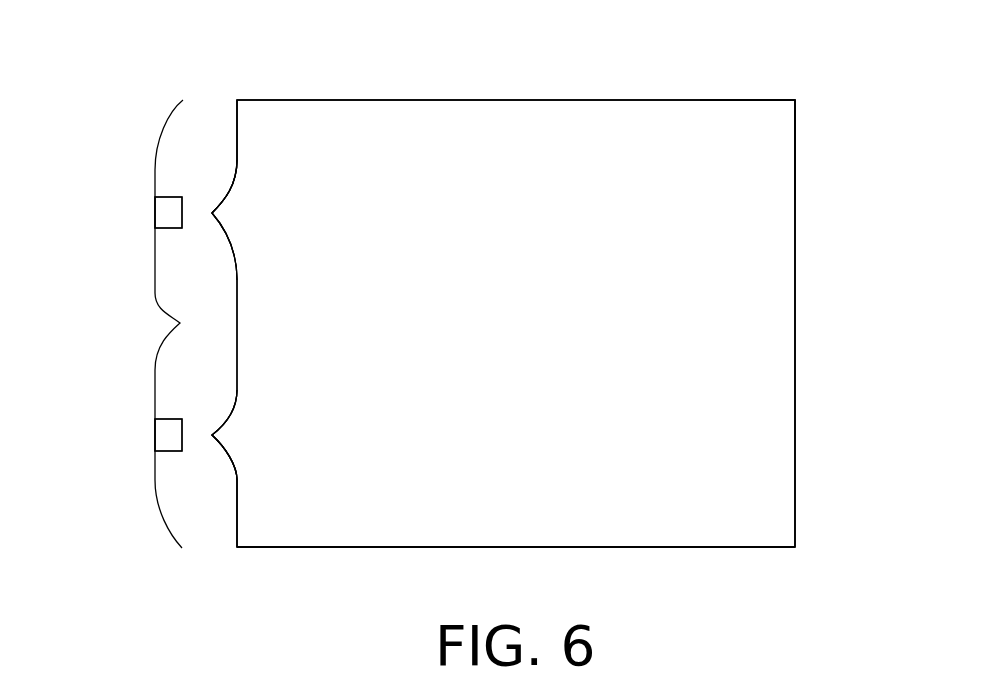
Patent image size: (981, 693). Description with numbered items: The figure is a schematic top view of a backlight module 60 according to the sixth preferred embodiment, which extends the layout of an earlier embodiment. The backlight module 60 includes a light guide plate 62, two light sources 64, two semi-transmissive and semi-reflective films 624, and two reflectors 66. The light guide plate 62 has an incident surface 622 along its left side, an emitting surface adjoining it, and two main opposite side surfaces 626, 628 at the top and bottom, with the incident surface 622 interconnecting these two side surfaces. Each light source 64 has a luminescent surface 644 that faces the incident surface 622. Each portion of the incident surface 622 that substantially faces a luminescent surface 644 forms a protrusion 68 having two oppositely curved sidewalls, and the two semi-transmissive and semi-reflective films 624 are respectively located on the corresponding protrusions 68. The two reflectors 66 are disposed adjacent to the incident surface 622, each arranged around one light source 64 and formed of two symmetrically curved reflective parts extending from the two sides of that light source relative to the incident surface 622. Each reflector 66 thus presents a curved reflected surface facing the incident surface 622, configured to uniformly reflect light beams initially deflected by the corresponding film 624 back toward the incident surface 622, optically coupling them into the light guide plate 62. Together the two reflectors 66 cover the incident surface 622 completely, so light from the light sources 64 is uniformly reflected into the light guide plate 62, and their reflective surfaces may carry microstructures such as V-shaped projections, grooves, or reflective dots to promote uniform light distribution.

The backlight module 60 is at (437, 32).
The light guide plate 62 is at (604, 96).
The incident surface 622 is at (233, 109).
The semi-transmissive and semi-reflective film 624 is at (762, 268).
The main side surface 626 is at (716, 97).
The main side surface 628 is at (660, 549).
The light source 64 is at (165, 216).
The luminescent surface 644 is at (185, 227).
The reflector 66 is at (155, 177).
The protrusion 68 is at (207, 204).